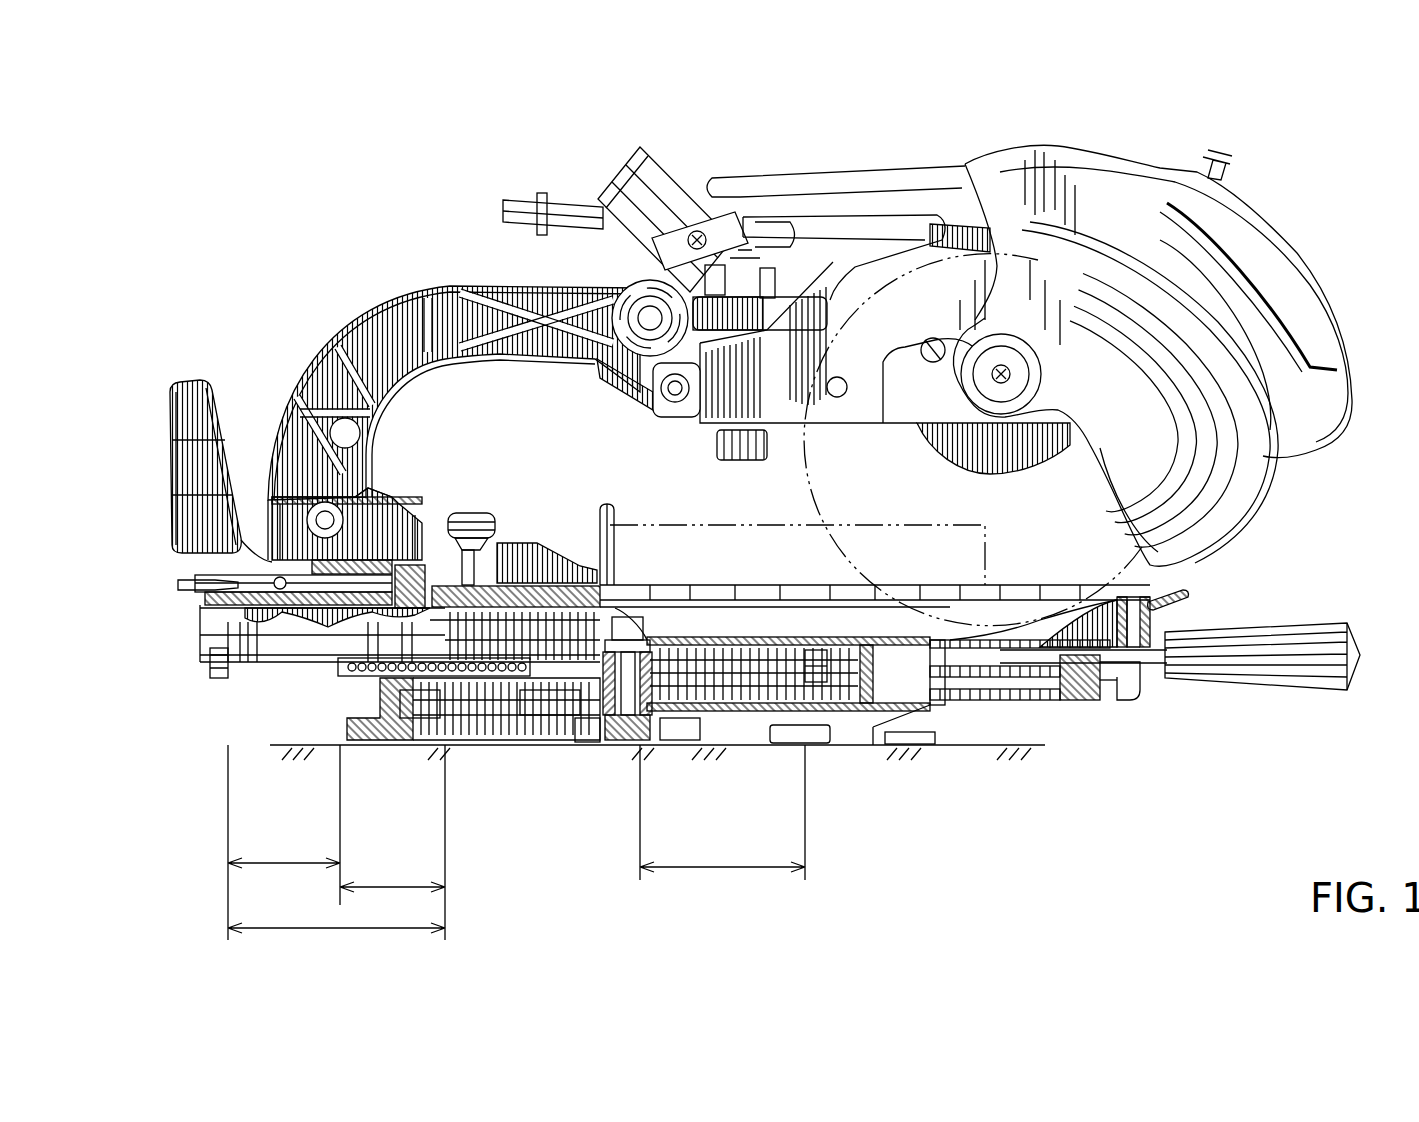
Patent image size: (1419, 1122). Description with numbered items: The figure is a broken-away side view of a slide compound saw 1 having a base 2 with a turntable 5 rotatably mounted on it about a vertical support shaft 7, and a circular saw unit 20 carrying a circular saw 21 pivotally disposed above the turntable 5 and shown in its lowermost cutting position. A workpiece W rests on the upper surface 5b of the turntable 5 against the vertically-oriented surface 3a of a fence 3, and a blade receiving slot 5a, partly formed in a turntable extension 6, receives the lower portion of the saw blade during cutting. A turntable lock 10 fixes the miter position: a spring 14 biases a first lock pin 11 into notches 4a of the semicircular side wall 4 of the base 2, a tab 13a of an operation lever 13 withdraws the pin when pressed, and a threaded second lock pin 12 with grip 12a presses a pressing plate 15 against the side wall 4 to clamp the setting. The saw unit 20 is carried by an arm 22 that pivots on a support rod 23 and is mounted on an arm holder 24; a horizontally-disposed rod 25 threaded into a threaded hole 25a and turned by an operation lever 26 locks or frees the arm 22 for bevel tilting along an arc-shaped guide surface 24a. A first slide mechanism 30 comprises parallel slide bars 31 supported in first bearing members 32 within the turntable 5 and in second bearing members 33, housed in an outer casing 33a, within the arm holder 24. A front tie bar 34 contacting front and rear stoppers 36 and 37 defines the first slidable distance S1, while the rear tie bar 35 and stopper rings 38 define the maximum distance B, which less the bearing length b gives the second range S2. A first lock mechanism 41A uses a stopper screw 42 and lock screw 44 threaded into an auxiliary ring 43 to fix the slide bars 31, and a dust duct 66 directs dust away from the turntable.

The slide compound saw 1 is at (869, 158).
The base 2 is at (717, 720).
The fence 3 is at (572, 560).
The vertically-oriented surface 3a is at (623, 513).
The side wall 4 is at (903, 707).
The notches 4a is at (923, 707).
The turntable 5 is at (750, 707).
The blade receiving slot 5a is at (787, 603).
The upper surface of the turntable 5b is at (877, 610).
The turntable extension 6 is at (1030, 650).
The vertical support shaft 7 is at (620, 737).
The turntable lock 10 is at (1150, 697).
The first lock pin 11 is at (1023, 700).
The second lock pin 12 is at (1117, 697).
The grip 12a is at (1290, 637).
The operation lever 13 is at (1147, 680).
The tab 13a is at (1188, 592).
The spring 14 is at (1097, 697).
The pressing plate 15 is at (1040, 705).
The circular saw unit 20 is at (763, 183).
The circular saw 21 is at (1003, 627).
The arm 22 is at (395, 298).
The support rod 23 is at (627, 247).
The arm holder 24 is at (408, 513).
The arc-shaped guide surface 24a is at (357, 487).
The horizontally-disposed rod 25 is at (277, 645).
The threaded hole 25a is at (195, 588).
The operation lever 26 is at (217, 452).
The first slide mechanism 30 is at (493, 683).
The slide bars 31 is at (310, 645).
The first bearing members 32 is at (527, 700).
The second bearing members 33 is at (395, 705).
The outer casing 33a is at (350, 678).
The front tie bar 34 is at (817, 707).
The rear tie bar 35 is at (208, 667).
The front stopper 36 is at (853, 707).
The rear stopper 37 is at (677, 727).
The stopper rings 38 is at (407, 693).
The first lock mechanism 41A is at (451, 508).
The stopper screw 42 is at (460, 685).
The auxiliary ring 43 is at (493, 523).
The lock screw 44 is at (480, 517).
The dust duct 66 is at (658, 157).
The workpiece W is at (757, 528).
The first slidable distance S1 is at (722, 887).
The second slidable range S2 is at (284, 884).
The length of the second bearing members b is at (392, 906).
The maximum slidable distance B is at (336, 951).